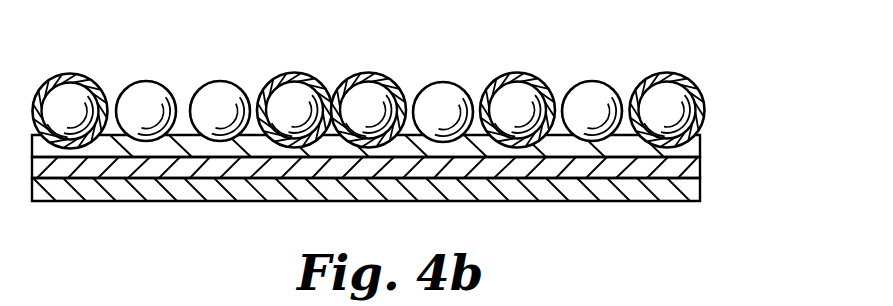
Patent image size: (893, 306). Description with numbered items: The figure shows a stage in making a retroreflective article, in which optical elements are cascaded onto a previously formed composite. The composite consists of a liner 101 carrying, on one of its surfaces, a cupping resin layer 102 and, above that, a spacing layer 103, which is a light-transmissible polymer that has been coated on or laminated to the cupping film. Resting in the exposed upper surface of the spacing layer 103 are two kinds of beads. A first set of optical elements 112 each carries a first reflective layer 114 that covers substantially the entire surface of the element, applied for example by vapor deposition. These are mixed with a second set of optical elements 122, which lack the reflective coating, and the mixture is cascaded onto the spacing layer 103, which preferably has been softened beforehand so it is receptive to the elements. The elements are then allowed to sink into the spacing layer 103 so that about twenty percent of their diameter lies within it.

The liner 101 is at (565, 188).
The cupping resin layer 102 is at (697, 167).
The spacing layer 103 is at (697, 142).
The first set of optical elements 112 is at (350, 98).
The first reflective layer 114 is at (75, 78).
The second set of optical elements 122 is at (200, 98).